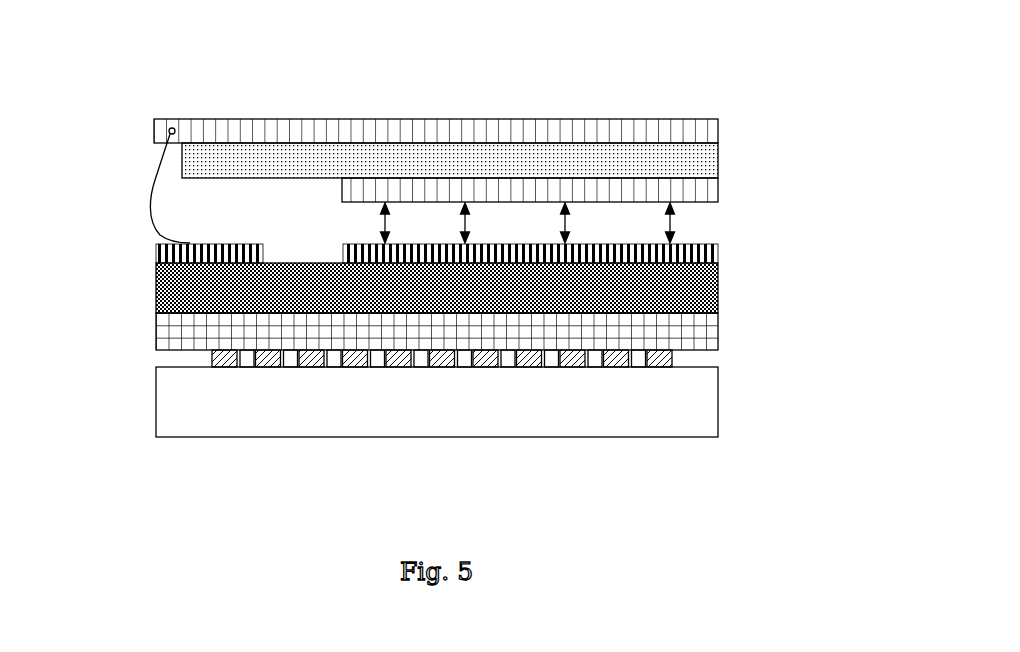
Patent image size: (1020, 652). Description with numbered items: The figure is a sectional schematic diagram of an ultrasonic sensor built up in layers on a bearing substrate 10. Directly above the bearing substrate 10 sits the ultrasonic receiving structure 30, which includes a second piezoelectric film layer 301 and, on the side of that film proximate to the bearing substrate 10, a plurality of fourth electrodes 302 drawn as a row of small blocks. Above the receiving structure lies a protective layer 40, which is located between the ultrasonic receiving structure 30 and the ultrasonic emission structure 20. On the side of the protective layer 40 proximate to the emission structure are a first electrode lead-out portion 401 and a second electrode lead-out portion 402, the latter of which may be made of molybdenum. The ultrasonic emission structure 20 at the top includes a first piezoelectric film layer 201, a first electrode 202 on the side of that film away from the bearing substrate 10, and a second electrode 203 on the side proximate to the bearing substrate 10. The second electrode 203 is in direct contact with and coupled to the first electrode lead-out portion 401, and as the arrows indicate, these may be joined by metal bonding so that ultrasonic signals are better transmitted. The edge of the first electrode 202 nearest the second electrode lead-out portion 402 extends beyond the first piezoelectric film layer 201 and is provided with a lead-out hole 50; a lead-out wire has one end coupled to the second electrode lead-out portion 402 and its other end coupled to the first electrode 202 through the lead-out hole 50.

The bearing substrate 10 is at (367, 408).
The ultrasonic emission structure 20 is at (484, 127).
The first piezoelectric film layer 201 is at (588, 158).
The first electrode 202 is at (665, 133).
The second electrode 203 is at (703, 203).
The ultrasonic receiving structure 30 is at (414, 408).
The second piezoelectric film layer 301 is at (156, 332).
The fourth electrodes 302 is at (655, 360).
The protective layer 40 is at (440, 257).
The first electrode lead-out portion 401 is at (718, 263).
The second electrode lead-out portion 402 is at (156, 252).
The lead-out hole 50 is at (170, 127).